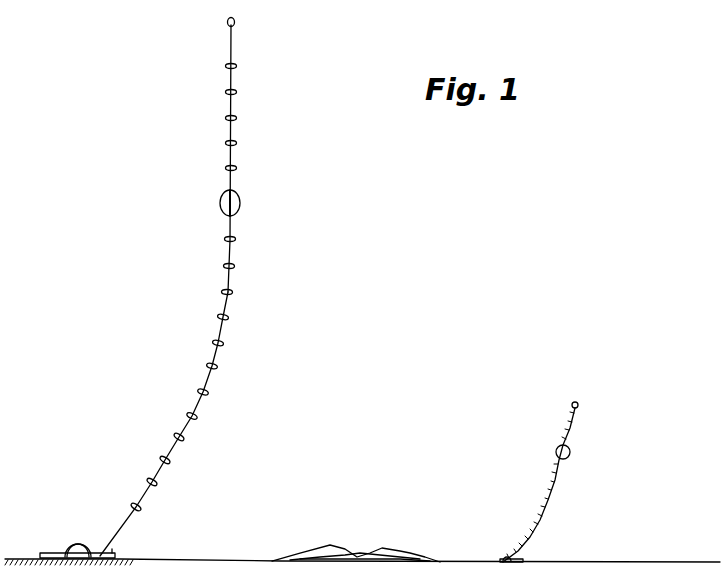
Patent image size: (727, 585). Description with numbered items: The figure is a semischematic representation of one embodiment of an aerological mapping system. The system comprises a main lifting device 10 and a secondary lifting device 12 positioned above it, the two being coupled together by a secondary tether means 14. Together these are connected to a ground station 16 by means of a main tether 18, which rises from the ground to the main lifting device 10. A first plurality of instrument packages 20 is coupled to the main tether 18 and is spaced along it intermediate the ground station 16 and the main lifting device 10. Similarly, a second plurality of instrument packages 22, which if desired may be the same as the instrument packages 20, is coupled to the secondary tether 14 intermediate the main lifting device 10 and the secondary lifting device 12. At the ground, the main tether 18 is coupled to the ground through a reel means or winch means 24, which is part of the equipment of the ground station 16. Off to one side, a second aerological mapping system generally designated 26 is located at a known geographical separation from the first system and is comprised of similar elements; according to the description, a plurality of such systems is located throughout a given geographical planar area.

The main lifting device 10 is at (240, 197).
The secondary lifting device 12 is at (234, 19).
The secondary tether means 14 is at (230, 105).
The ground station 16 is at (74, 546).
The main tether 18 is at (217, 331).
The first plurality of instrument packages 20 is at (232, 242).
The second plurality of instrument packages 22 is at (240, 97).
The reel means or winch means 24 is at (97, 553).
The second aerological mapping system 26 is at (581, 458).